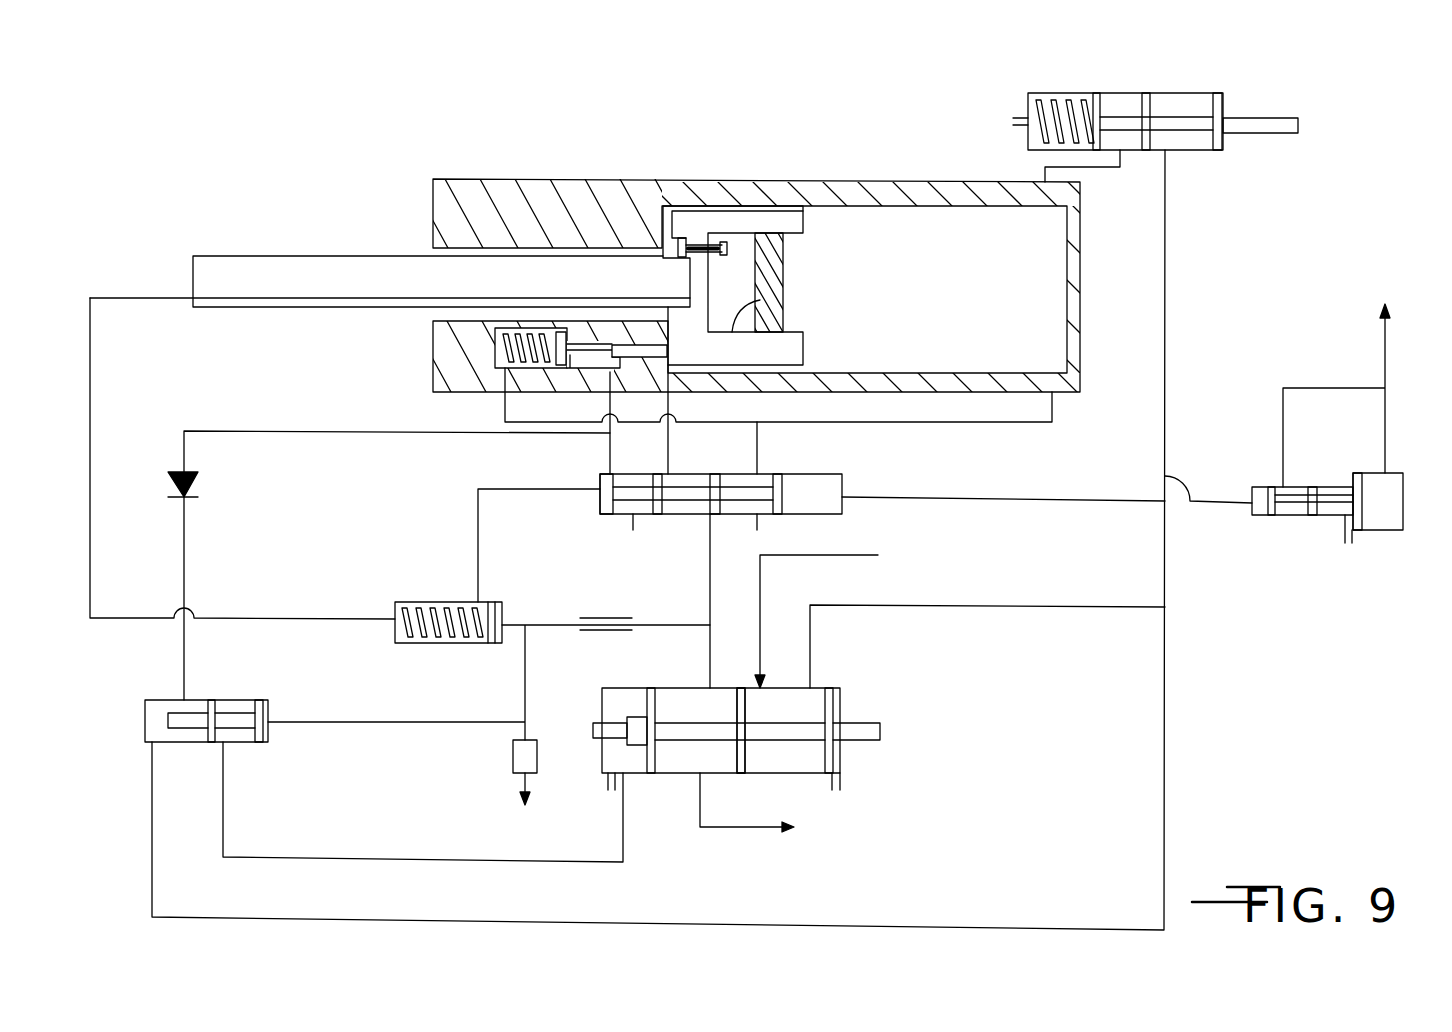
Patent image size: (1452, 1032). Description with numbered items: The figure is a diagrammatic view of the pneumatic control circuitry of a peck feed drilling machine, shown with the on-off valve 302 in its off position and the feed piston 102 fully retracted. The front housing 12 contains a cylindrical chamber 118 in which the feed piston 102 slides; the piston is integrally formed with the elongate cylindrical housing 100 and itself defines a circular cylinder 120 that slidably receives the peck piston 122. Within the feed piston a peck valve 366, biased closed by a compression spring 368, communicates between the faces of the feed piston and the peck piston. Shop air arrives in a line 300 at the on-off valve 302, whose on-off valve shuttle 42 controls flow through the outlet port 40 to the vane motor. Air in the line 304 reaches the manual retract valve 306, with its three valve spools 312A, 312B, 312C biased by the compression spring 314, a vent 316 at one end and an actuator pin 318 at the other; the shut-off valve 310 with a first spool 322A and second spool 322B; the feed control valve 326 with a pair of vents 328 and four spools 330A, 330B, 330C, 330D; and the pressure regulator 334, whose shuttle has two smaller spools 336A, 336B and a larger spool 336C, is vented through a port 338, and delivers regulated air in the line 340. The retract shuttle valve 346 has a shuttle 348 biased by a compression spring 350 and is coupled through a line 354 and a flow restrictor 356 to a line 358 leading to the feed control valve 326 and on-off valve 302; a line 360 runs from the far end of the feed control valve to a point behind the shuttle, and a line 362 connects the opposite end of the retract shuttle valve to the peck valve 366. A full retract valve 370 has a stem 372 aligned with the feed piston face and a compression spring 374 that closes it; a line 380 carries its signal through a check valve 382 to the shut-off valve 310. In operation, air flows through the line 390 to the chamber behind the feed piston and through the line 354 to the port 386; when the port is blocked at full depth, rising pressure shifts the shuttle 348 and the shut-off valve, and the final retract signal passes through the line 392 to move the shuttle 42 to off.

The front housing 12 is at (552, 179).
The elongate cylindrical housing 100 is at (258, 255).
The feed piston 102 is at (684, 222).
The cylindrical chamber 118 is at (896, 207).
The circular cylinder 120 is at (786, 297).
The peck piston 122 is at (786, 309).
The line 300 is at (765, 570).
The on-off valve 302 is at (838, 688).
The line 304 is at (1155, 450).
The manual retract valve 306 is at (1198, 150).
The shut-off valve 310 is at (152, 700).
The valve spool 312A is at (1093, 150).
The valve spool 312B is at (1143, 150).
The valve spool 312C is at (1250, 78).
The compression spring 314 is at (1050, 93).
The vent 316 is at (1013, 122).
The actuator pin 318 is at (1257, 118).
The first spool 322A is at (205, 700).
The second spool 322B is at (258, 742).
The feed control valve 326 is at (820, 473).
The vents 328 is at (633, 528).
The spool 330A is at (607, 514).
The spool 330B is at (657, 514).
The spool 330C is at (716, 474).
The spool 330D is at (790, 505).
The pressure regulator 334 is at (1403, 527).
The smaller spool 336A is at (1265, 487).
The smaller spool 336B is at (1310, 515).
The larger spool 336C is at (1358, 473).
The port 338 is at (1345, 543).
The line 340 is at (1385, 348).
The retract shuttle valve 346 is at (432, 602).
The shuttle 348 is at (490, 644).
The compression spring 350 is at (425, 643).
The line 354 is at (537, 622).
The flow restrictor 356 is at (626, 633).
The line 358 is at (710, 590).
The line 360 is at (540, 488).
The line 362 is at (233, 617).
The peck valve 366 is at (694, 243).
The compression spring 368 is at (715, 258).
The full retract valve 370 is at (495, 355).
The stem 372 is at (628, 345).
The compression spring 374 is at (515, 326).
The pneumatic line 380 is at (305, 432).
The check valve 382 is at (200, 481).
The port 386 is at (513, 758).
The line 390 is at (668, 395).
The line 392 is at (290, 858).
The outlet port 40 is at (718, 827).
The on-off valve shuttle 42 is at (785, 740).